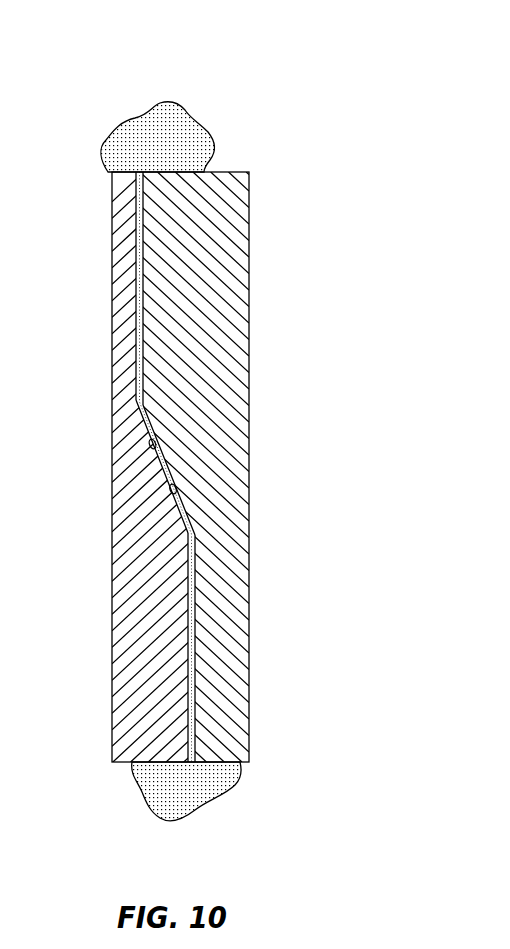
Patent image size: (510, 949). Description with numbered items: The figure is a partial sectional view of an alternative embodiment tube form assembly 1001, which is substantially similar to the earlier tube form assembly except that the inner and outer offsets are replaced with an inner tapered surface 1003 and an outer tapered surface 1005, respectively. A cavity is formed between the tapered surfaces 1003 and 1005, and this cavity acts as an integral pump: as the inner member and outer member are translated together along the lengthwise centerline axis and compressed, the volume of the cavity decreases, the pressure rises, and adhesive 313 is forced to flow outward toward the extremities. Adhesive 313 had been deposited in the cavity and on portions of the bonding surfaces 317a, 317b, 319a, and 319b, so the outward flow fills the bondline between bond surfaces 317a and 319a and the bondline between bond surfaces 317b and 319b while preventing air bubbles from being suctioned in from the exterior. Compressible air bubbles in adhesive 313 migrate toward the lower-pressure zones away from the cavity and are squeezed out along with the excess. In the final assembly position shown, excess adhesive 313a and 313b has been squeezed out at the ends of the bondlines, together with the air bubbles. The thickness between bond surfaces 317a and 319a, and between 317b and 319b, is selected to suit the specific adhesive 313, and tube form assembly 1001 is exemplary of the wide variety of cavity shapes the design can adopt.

The tube form assembly 1001 is at (202, 437).
The adhesive 313 is at (135, 293).
The excess adhesive 313a is at (168, 123).
The excess adhesive 313b is at (162, 785).
The bonding surface 317a is at (188, 582).
The bonding surface 317b is at (135, 343).
The bonding surface 319a is at (192, 687).
The bonding surface 319b is at (140, 250).
The inner tapered surface 1003 is at (155, 442).
The outer tapered surface 1005 is at (171, 492).